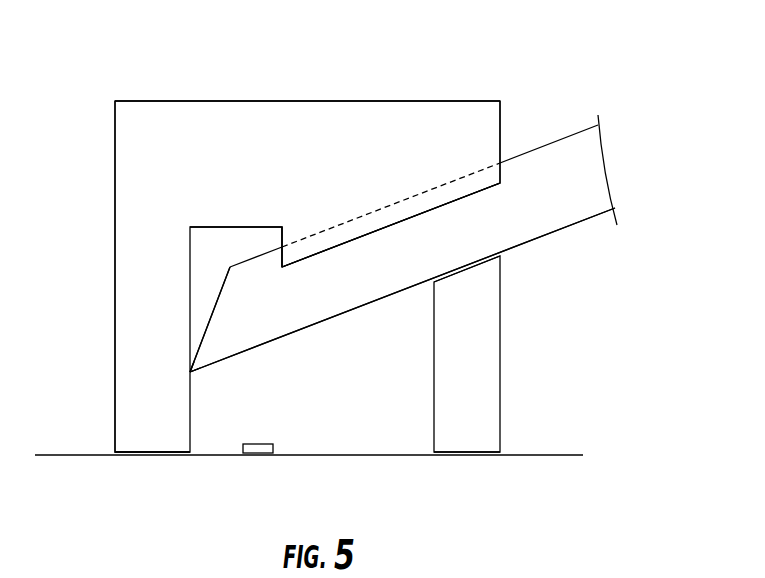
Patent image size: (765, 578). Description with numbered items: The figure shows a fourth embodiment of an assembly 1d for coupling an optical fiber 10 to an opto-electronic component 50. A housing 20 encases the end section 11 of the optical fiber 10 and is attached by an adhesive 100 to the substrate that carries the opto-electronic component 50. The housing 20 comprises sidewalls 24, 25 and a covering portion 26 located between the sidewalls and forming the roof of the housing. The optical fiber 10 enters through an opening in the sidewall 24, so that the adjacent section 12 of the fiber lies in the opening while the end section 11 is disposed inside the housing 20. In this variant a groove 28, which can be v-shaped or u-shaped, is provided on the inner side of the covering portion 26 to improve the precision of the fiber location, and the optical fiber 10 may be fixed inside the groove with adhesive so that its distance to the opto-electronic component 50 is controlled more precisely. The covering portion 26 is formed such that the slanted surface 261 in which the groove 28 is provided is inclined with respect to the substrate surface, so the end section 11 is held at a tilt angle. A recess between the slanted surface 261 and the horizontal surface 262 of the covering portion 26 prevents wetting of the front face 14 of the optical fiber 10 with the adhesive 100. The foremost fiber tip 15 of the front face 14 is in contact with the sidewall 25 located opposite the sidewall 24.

The assembly 1d is at (342, 240).
The optical fiber 10 is at (520, 230).
The end section of the optical fiber 11 is at (277, 323).
The adjacent section of the optical fiber 12 is at (435, 260).
The front face of the optical fiber 14 is at (215, 302).
The foremost fiber tip 15 is at (192, 375).
The housing 20 is at (165, 101).
The sidewall 24 is at (284, 240).
The sidewall 25 is at (128, 322).
The covering portion 26 is at (307, 110).
The groove 28 is at (430, 186).
The opto-electronic component 50 is at (258, 444).
The adhesive 100 is at (153, 452).
The slanted surface 261 is at (388, 226).
The horizontal surface 262 is at (233, 227).